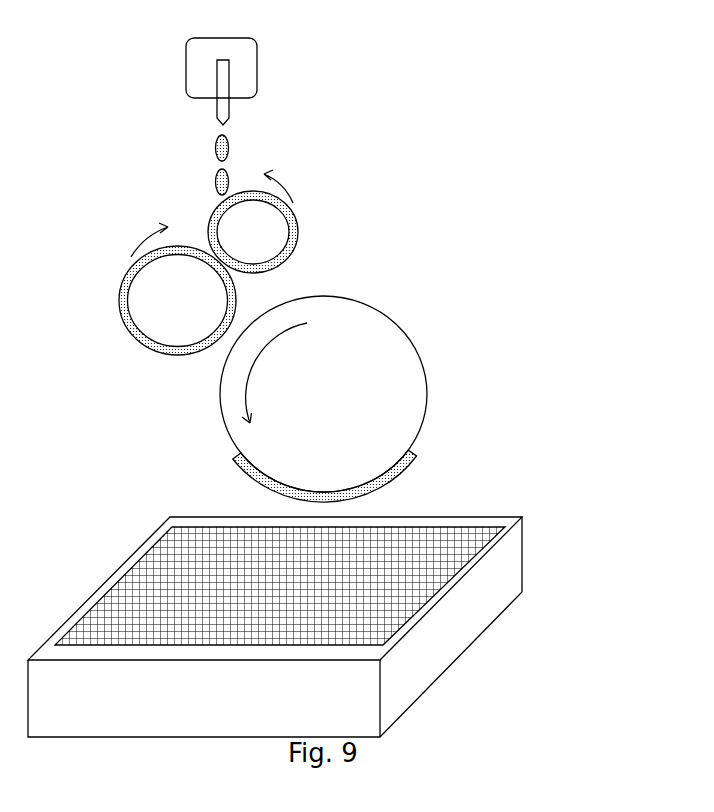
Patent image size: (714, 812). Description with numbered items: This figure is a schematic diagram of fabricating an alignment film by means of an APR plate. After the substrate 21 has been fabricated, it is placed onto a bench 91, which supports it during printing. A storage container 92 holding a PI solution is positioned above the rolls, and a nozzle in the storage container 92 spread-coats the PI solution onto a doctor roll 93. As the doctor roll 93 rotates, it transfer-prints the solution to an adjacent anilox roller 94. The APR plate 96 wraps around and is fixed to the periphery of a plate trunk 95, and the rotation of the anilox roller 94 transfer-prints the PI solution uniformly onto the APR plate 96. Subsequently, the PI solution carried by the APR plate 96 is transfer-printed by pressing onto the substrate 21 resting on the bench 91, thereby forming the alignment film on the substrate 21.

The storage container 92 is at (241, 62).
The doctor roll 93 is at (275, 232).
The anilox roller 94 is at (153, 318).
The plate trunk 95 is at (387, 396).
The APR plate 96 is at (407, 457).
The bench 91 is at (497, 593).
The substrate 21 is at (435, 538).